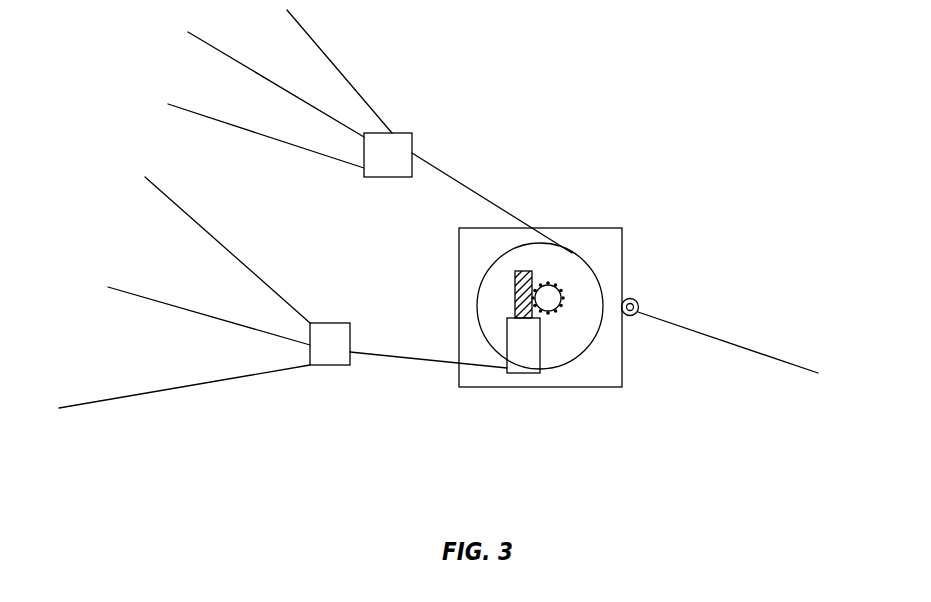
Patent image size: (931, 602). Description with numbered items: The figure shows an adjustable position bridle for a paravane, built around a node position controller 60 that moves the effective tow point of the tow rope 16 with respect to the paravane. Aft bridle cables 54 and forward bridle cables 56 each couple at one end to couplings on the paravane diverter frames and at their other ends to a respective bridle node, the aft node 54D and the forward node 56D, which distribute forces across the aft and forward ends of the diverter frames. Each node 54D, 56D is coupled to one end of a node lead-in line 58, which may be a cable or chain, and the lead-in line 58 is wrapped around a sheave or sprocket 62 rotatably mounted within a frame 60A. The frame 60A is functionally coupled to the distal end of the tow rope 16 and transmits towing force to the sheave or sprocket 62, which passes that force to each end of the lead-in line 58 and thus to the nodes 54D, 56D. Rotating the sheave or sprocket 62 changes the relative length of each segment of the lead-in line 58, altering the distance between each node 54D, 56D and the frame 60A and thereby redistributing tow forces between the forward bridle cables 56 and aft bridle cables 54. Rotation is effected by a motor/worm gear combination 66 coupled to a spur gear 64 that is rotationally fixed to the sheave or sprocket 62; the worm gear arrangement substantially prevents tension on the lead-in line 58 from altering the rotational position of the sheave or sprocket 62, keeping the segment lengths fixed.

The tow rope 16 is at (707, 332).
The aft bridle cables 54 is at (242, 58).
The aft node 54D is at (388, 178).
The forward bridle cables 56 is at (188, 213).
The forward node 56D is at (330, 365).
The node lead-in line 58 is at (467, 187).
The node position controller 60 is at (499, 370).
The frame 60A is at (613, 290).
The sheave or sprocket 62 is at (568, 251).
The spur gear 64 is at (566, 300).
The motor/worm gear combination 66 is at (505, 338).